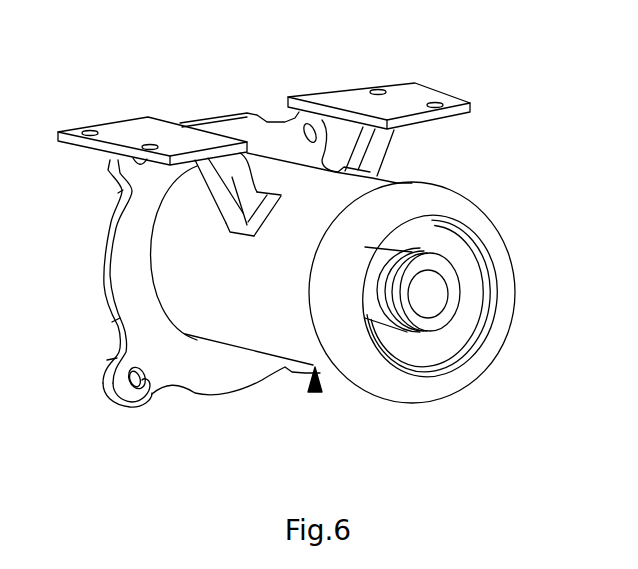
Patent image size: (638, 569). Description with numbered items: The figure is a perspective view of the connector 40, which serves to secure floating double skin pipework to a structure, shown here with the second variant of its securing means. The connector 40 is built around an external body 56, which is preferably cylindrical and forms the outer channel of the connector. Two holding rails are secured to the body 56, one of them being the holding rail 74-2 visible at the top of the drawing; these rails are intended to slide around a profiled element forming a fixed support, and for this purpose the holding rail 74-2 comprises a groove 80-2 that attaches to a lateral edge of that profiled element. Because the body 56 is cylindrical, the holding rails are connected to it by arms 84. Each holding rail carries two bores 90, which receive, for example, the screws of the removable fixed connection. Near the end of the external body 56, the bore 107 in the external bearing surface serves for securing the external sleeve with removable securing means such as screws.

The bores 90 is at (150, 145).
The groove 80-2 is at (268, 107).
The holding rail 74-2 is at (475, 114).
The arms 84 is at (230, 213).
The external body 56 is at (230, 328).
The connector 40 is at (313, 392).
The bores 107 is at (152, 400).